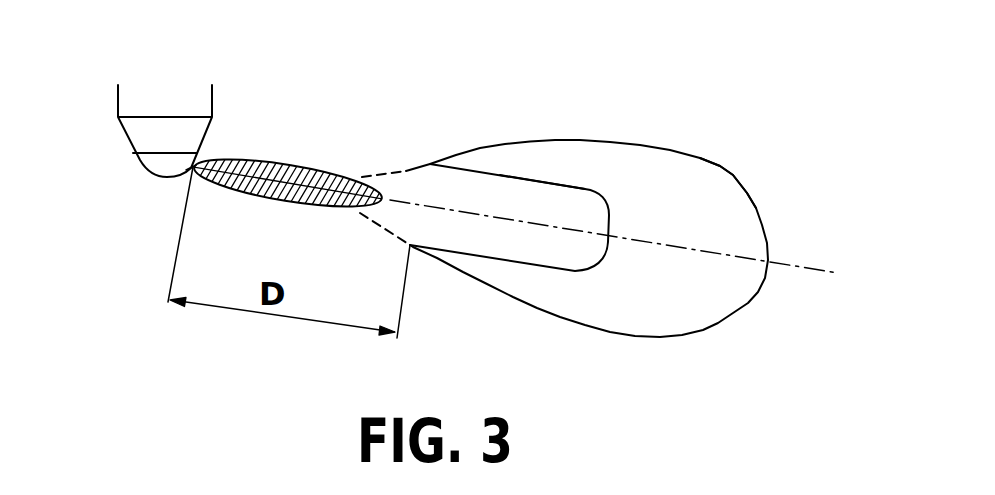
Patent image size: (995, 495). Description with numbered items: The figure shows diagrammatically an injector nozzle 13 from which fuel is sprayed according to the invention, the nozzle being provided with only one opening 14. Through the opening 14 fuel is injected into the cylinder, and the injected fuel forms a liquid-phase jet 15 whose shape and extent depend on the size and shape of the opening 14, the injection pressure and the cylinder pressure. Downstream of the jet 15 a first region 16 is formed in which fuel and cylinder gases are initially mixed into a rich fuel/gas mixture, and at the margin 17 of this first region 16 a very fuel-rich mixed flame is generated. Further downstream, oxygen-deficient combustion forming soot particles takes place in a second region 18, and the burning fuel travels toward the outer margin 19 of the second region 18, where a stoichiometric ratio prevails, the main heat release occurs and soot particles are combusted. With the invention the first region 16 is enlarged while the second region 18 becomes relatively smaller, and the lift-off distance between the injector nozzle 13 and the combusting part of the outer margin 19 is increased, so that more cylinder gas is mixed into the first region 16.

The injector nozzle 13 is at (140, 175).
The opening 14 is at (194, 166).
The jet 15 is at (277, 160).
The first region 16 is at (477, 192).
The margin 17 is at (553, 185).
The second region 18 is at (625, 165).
The outer margin 19 is at (733, 173).